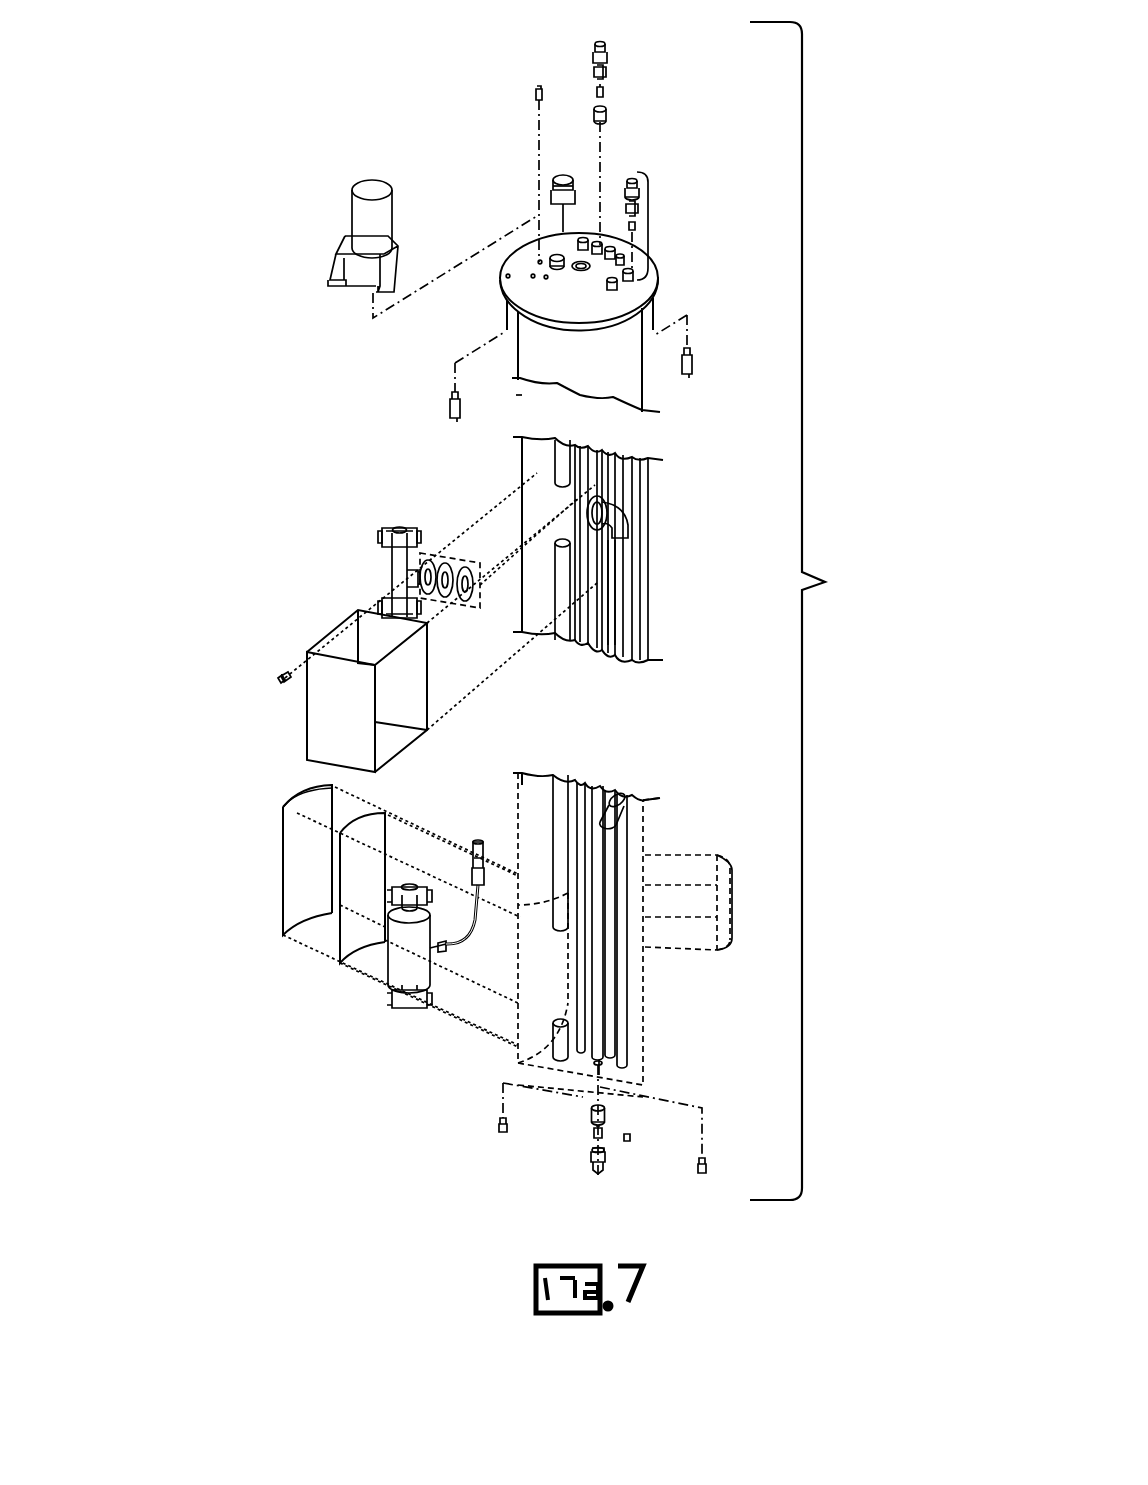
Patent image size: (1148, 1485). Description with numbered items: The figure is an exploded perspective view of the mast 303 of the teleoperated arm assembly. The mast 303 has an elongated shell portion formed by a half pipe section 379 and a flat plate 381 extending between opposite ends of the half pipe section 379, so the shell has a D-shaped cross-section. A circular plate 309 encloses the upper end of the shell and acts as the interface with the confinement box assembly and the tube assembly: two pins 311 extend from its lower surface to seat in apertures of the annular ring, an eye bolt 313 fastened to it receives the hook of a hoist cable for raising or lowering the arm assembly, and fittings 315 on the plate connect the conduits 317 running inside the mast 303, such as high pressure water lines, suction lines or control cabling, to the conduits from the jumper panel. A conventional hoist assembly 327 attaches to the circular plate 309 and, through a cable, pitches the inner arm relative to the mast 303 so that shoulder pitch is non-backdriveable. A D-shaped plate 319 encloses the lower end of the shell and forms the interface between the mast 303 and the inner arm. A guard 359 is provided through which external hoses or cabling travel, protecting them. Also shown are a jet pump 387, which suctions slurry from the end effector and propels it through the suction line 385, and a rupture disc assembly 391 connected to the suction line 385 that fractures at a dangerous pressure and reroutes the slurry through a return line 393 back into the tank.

The mast 303 is at (694, 540).
The circular plate 309 is at (640, 290).
The pins 311 is at (694, 360).
The eye bolt 313 is at (572, 265).
The fittings 315 is at (650, 223).
The conduits 317 is at (612, 1013).
The D-shaped plate 319 is at (640, 1075).
The hoist assembly 327 is at (353, 213).
The guard 359 is at (630, 838).
The half pipe section 379 is at (647, 387).
The flat plate 381 is at (607, 338).
The suction line 385 is at (557, 827).
The jet pump 387 is at (413, 960).
The rupture disc assembly 391 is at (394, 575).
The return line 393 is at (624, 577).